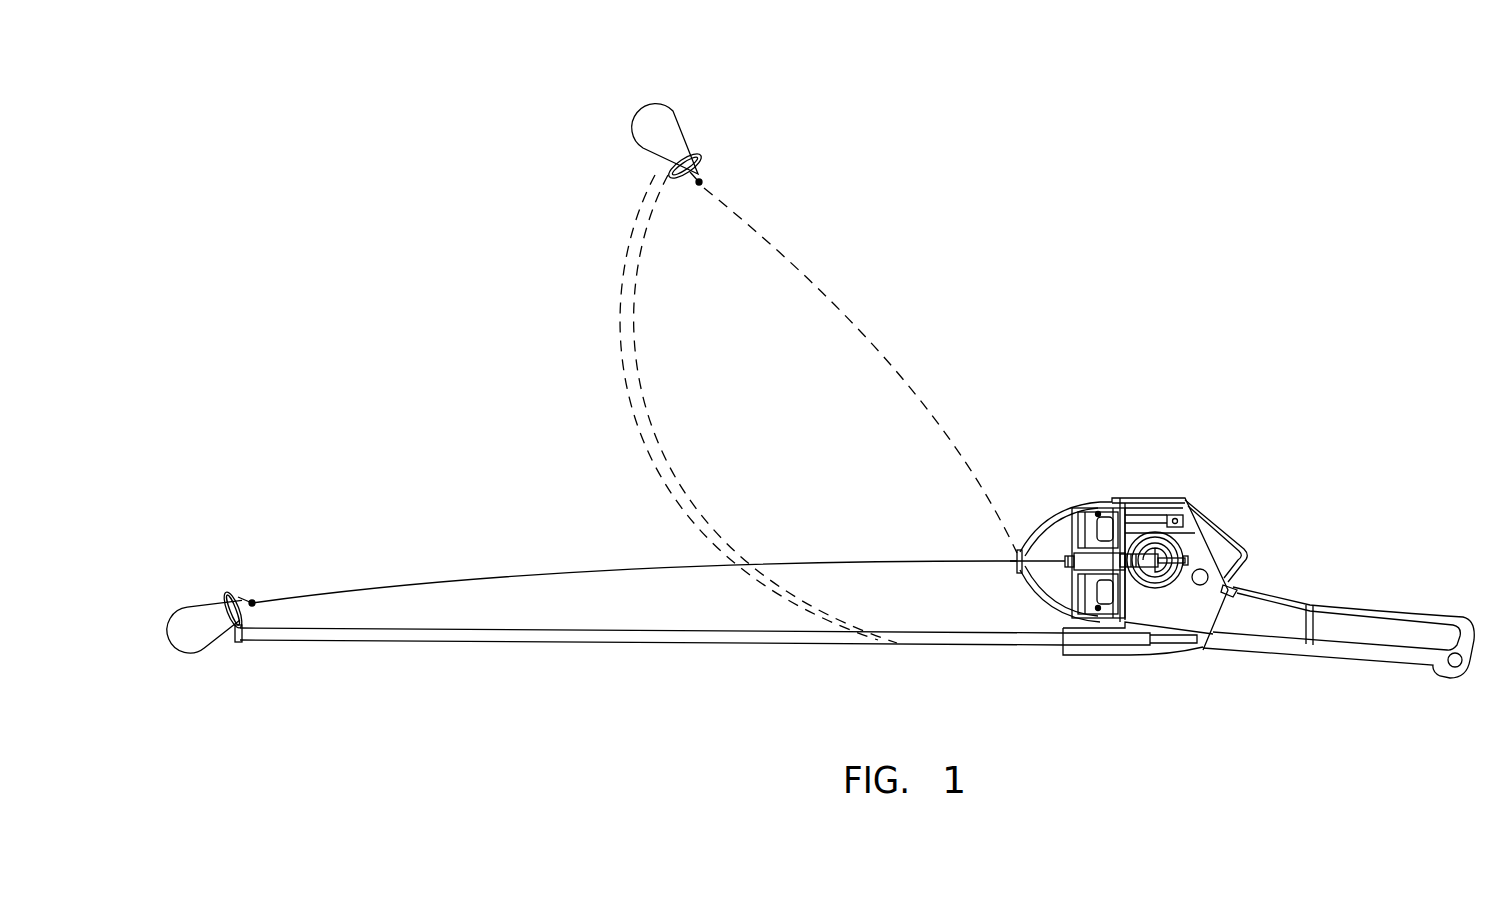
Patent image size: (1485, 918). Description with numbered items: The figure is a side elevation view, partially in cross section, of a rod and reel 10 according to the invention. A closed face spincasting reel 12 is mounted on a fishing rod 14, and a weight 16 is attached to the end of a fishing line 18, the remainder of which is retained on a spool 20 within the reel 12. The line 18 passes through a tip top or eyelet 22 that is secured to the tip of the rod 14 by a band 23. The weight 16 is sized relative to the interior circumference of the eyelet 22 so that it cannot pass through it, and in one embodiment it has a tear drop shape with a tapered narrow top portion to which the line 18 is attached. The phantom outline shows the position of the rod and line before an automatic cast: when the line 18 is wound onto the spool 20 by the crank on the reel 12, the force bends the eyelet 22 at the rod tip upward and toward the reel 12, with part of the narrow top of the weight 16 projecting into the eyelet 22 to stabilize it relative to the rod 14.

The rod and reel 10 is at (1190, 295).
The closed face spincasting reel 12 is at (1230, 506).
The fishing rod 14 is at (1019, 646).
The weight 16 is at (645, 150).
The fishing line 18 is at (557, 569).
The spool 20 is at (1100, 513).
The eyelet 22 is at (706, 160).
The band 23 is at (247, 640).